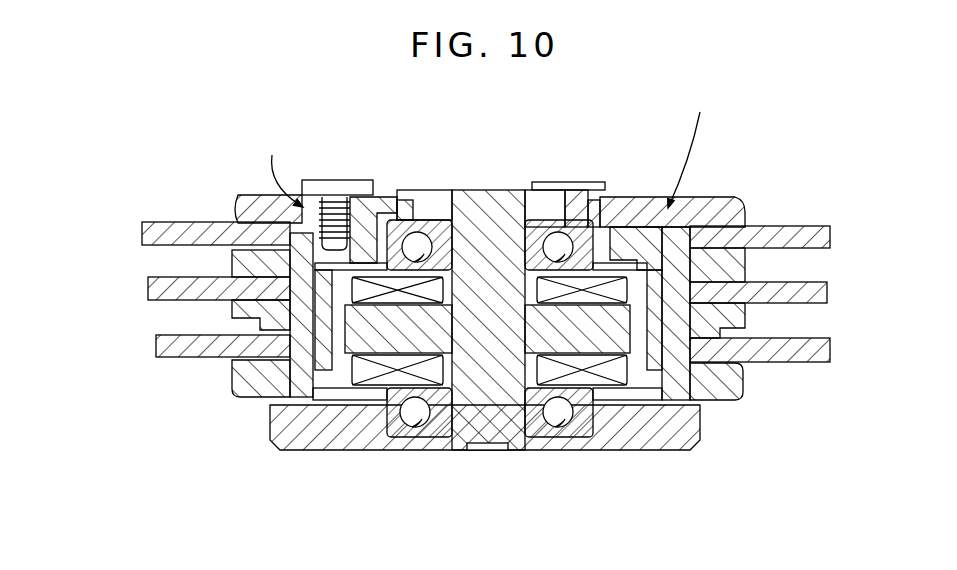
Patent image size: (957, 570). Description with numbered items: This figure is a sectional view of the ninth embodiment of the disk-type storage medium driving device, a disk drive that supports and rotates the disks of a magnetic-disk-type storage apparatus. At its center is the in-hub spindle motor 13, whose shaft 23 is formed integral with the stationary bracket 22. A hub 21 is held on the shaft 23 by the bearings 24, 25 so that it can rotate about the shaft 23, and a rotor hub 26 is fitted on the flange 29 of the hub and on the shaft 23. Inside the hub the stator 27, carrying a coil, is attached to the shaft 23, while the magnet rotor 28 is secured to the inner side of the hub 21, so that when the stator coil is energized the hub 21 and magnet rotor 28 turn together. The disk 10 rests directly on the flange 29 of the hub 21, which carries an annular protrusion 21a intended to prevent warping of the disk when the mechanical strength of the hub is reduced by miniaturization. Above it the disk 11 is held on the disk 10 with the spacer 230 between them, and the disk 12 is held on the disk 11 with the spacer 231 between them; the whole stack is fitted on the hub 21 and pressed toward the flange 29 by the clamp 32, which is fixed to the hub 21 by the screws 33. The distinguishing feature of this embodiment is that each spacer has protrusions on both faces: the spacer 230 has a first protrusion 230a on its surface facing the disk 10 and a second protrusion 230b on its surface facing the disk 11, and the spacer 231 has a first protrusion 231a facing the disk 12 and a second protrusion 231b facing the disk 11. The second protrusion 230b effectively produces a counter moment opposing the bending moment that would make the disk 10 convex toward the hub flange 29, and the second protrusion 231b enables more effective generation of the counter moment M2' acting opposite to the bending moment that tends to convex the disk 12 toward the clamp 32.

The disk 10 is at (167, 353).
The disk 11 is at (158, 285).
The disk 12 is at (158, 232).
The spindle motor 13 is at (623, 462).
The hub 21 is at (645, 220).
The annular protrusion 21a is at (223, 353).
The bracket 22 is at (427, 452).
The shaft 23 is at (470, 230).
The bearing 24 is at (543, 208).
The bearing 25 is at (530, 420).
The rotor hub 26 is at (570, 210).
The stator 27 is at (367, 355).
The magnet rotor 28 is at (715, 268).
The flange 29 is at (720, 387).
The clamp 32 is at (712, 210).
The screw 33 is at (325, 190).
The spacer 230 is at (727, 323).
The first protrusion 230a is at (217, 347).
The second protrusion 230b is at (250, 307).
The spacer 231 is at (730, 268).
The first protrusion 231a is at (280, 246).
The second protrusion 231b is at (243, 273).
The counter moment M2' is at (489, 140).